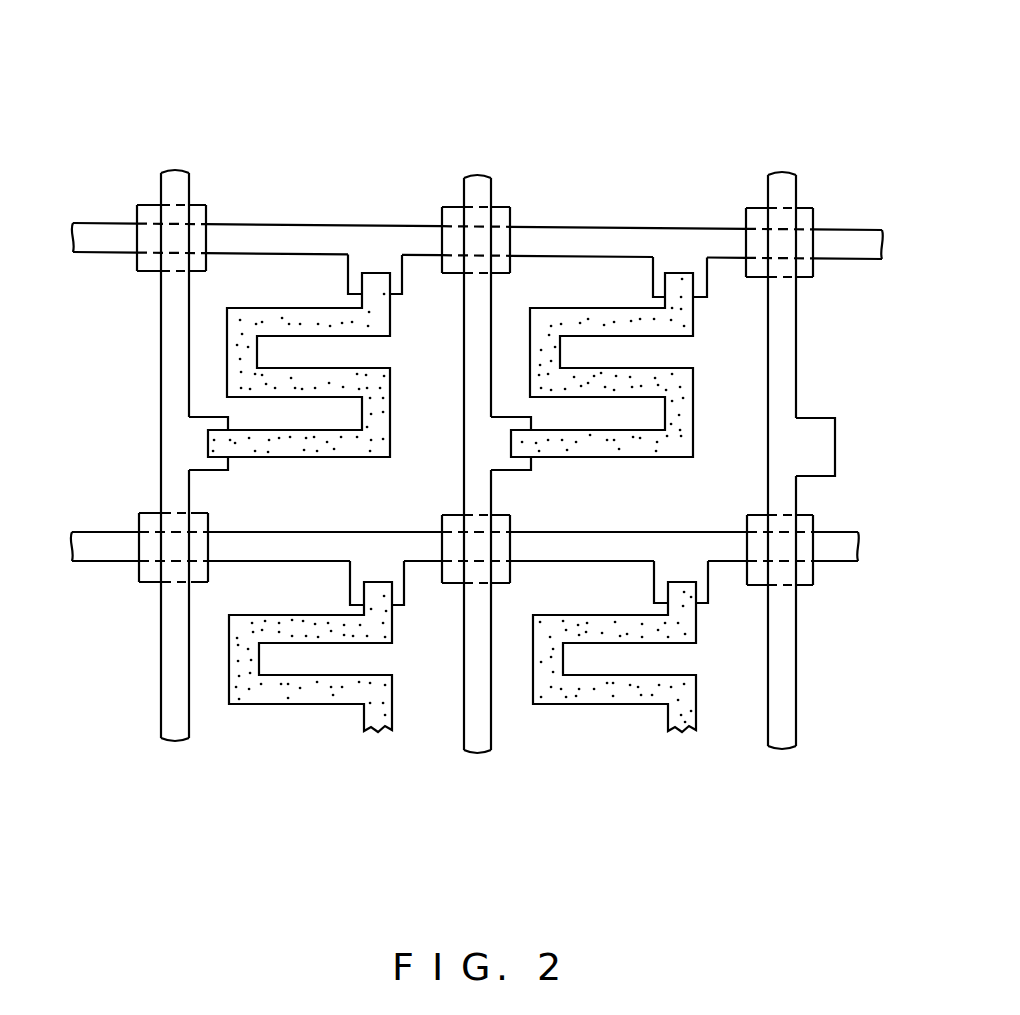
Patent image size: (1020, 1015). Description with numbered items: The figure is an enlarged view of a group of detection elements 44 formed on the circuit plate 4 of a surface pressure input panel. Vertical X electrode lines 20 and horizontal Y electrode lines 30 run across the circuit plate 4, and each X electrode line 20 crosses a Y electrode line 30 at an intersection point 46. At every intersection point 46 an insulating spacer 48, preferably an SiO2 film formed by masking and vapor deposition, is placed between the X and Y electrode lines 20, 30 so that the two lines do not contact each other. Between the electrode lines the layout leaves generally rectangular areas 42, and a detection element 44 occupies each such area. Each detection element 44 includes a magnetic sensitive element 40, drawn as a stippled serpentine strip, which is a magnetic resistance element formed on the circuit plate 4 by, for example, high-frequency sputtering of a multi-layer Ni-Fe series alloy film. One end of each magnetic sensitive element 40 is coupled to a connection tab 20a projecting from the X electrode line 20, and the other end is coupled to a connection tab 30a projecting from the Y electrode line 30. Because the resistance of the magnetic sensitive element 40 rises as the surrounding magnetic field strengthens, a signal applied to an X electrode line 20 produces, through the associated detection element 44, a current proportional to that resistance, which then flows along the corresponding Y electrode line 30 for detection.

The circuit plate 4 is at (665, 69).
The X electrode line 20 is at (170, 355).
The connection tab 20a is at (222, 464).
The Y electrode line 30 is at (555, 232).
The connection tab 30a is at (392, 277).
The magnetic sensitive element 40 is at (278, 322).
The rectangular area 42 is at (577, 277).
The detection element 44 is at (314, 267).
The intersection point 46 is at (170, 233).
The insulating spacer 48 is at (137, 270).